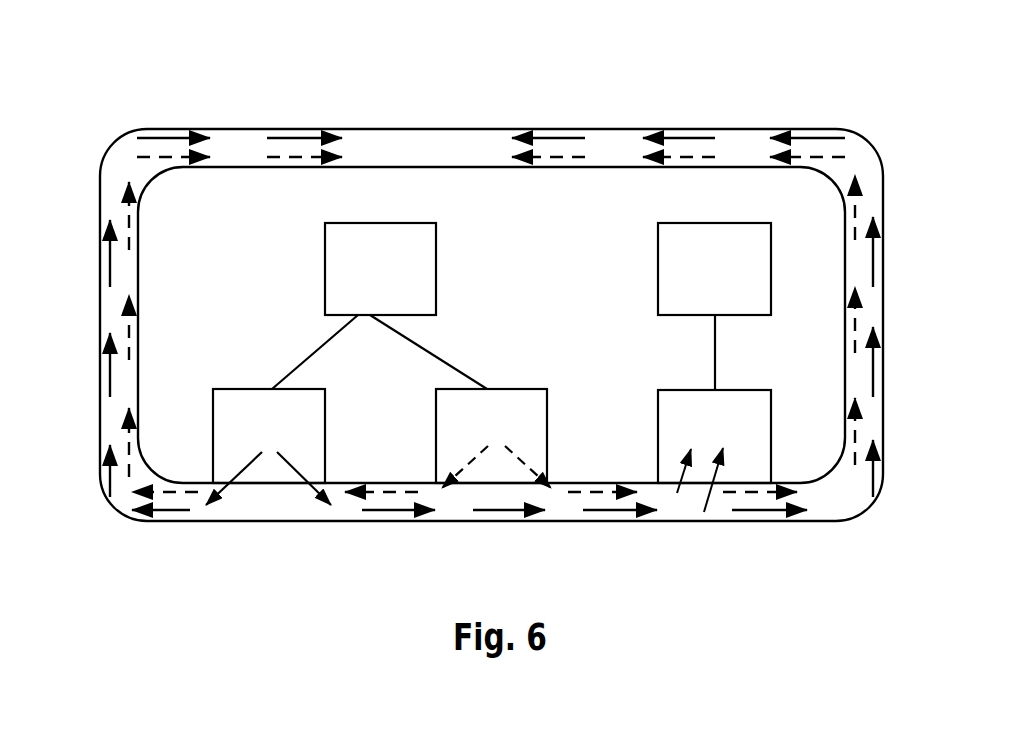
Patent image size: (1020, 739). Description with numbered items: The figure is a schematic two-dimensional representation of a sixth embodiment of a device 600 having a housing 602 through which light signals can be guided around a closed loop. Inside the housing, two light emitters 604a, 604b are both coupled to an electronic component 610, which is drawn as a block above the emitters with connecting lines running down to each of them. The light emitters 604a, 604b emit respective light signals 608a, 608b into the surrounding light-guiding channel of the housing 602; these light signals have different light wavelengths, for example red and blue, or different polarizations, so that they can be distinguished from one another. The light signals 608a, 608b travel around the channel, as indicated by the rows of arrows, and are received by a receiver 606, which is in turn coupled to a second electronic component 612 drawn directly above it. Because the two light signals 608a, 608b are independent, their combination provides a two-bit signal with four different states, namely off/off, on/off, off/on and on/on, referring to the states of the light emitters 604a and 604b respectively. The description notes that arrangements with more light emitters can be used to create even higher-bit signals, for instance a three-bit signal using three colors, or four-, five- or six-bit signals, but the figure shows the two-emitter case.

The device 600 is at (771, 94).
The light guide loop 602 is at (735, 128).
The light emitter 604a is at (303, 483).
The light emitter 604b is at (535, 389).
The receiver 606 is at (695, 485).
The light signal 608a is at (382, 508).
The light signal 608b is at (563, 487).
The electronic component 610 is at (363, 223).
The electronic component 612 is at (658, 262).